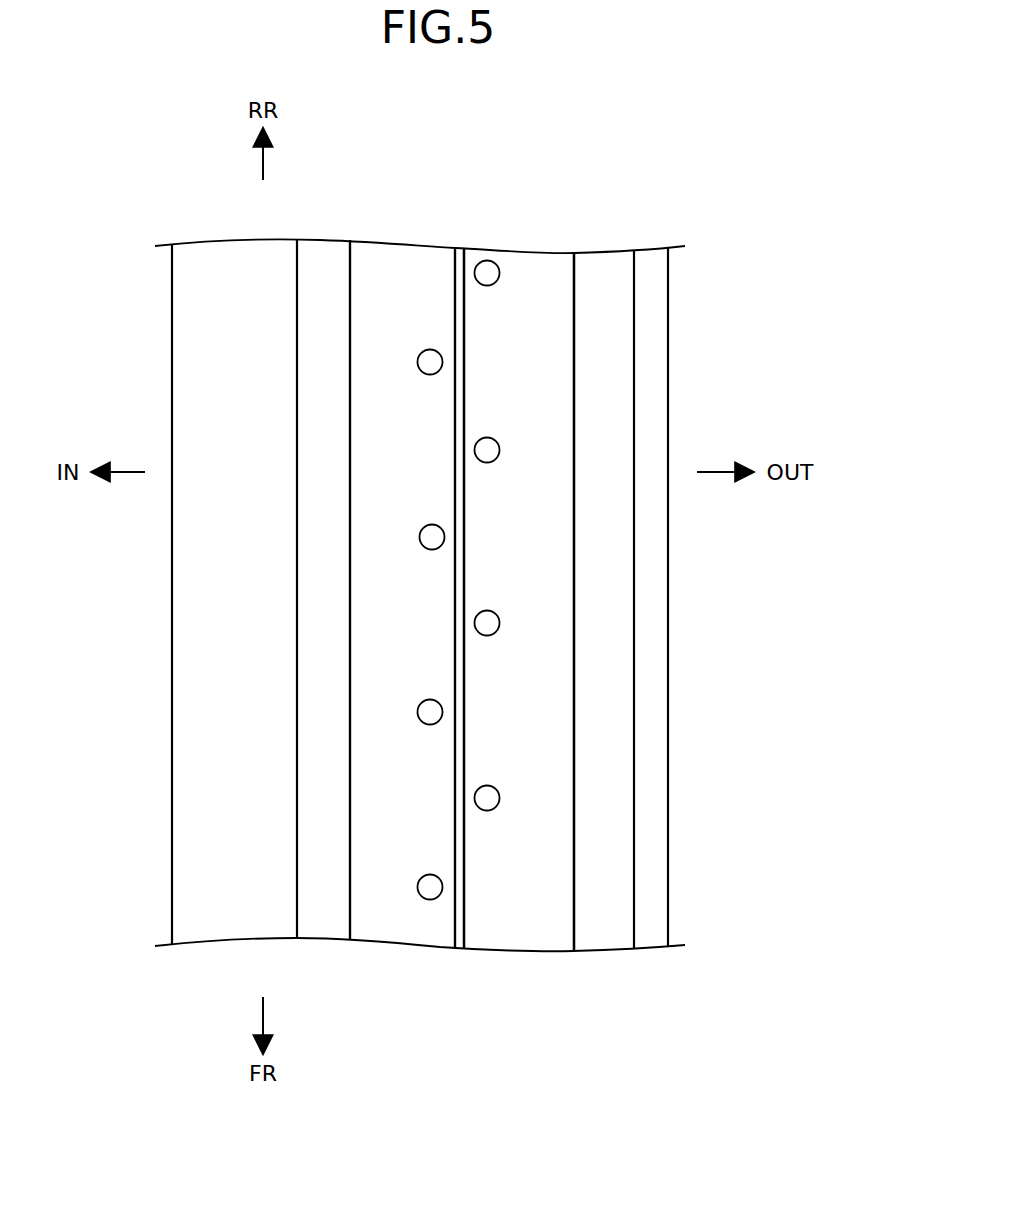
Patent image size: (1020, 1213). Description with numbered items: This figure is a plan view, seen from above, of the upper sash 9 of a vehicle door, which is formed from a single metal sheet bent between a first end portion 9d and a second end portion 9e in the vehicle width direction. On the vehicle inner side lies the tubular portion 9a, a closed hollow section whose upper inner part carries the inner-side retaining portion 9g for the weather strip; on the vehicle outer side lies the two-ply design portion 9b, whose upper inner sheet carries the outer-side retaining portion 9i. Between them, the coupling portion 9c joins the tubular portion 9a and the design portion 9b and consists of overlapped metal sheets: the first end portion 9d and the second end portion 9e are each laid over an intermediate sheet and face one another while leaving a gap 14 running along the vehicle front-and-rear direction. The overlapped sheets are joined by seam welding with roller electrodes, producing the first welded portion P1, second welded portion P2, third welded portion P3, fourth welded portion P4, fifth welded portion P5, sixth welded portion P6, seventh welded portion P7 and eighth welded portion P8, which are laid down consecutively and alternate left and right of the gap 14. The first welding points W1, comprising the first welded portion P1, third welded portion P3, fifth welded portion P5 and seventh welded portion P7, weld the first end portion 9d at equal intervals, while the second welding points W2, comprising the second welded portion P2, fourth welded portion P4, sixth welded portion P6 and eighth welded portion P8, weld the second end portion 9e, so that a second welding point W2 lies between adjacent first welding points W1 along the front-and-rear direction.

The upper sash 9 is at (426, 564).
The tubular portion 9a is at (195, 298).
The design portion 9b is at (655, 298).
The coupling portion 9c is at (540, 267).
The first end portion 9d is at (391, 918).
The second end portion 9e is at (520, 918).
The inner-side retaining portion 9g is at (317, 400).
The outer-side retaining portion 9i is at (608, 565).
The gap 14 is at (459, 257).
The first welding points W1 is at (270, 289).
The second welding points W2 is at (614, 264).
The first welded portion P1 is at (430, 887).
The second welded portion P2 is at (487, 798).
The third welded portion P3 is at (430, 712).
The fourth welded portion P4 is at (487, 623).
The fifth welded portion P5 is at (432, 537).
The sixth welded portion P6 is at (487, 450).
The seventh welded portion P7 is at (430, 362).
The eighth welded portion P8 is at (487, 273).